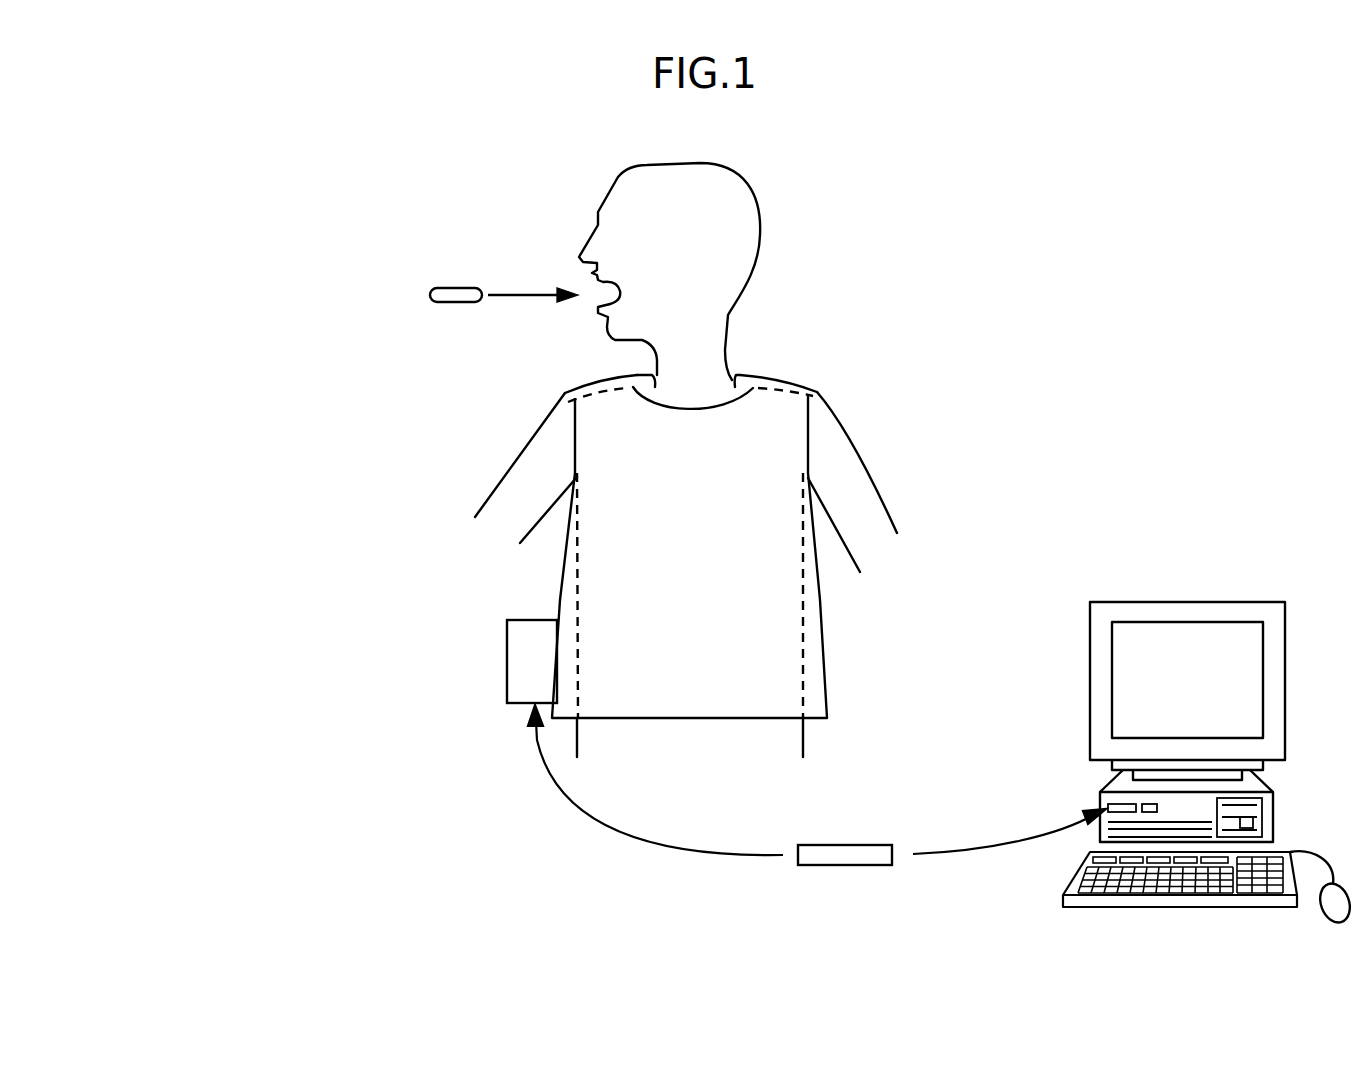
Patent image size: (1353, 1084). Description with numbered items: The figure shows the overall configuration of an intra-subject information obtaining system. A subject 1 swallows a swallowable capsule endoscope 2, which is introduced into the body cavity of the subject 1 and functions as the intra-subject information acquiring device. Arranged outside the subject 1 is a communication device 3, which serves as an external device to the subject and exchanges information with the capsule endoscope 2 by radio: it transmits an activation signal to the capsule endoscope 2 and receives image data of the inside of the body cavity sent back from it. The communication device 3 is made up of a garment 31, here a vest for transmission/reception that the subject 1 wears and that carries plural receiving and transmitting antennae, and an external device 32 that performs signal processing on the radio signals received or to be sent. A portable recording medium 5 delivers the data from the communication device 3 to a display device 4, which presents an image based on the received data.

The subject 1 is at (788, 163).
The capsule endoscope 2 is at (455, 303).
The communication device 3 is at (257, 662).
The garment for transmission/reception 31 is at (557, 608).
The external device 32 is at (518, 658).
The display device 4 is at (1180, 602).
The portable recording medium 5 is at (845, 866).